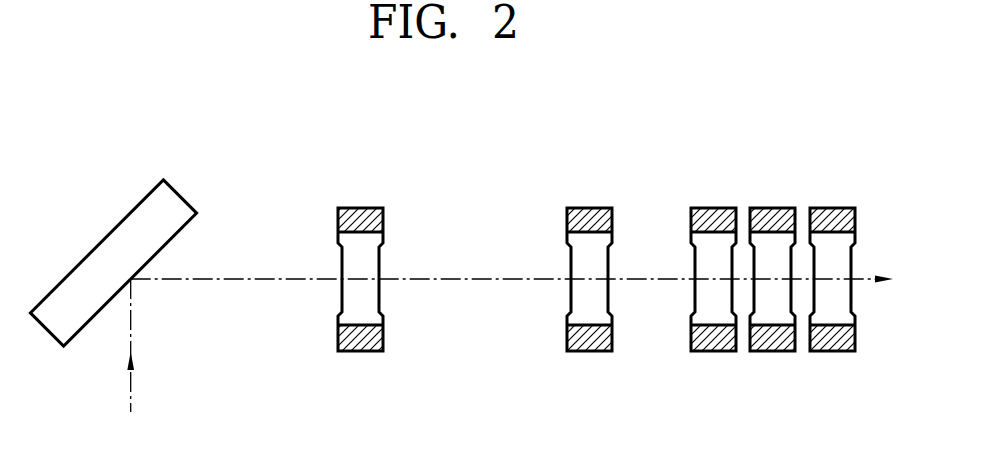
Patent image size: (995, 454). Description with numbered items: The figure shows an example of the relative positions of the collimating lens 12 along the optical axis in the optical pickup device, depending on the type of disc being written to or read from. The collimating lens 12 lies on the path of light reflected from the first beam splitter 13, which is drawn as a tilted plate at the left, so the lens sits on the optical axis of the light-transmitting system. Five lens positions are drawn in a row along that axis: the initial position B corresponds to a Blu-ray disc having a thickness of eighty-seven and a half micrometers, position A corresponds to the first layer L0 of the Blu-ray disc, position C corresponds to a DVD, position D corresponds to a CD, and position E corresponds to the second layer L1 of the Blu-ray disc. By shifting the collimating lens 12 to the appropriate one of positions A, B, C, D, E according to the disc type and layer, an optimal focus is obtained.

The collimating lens 12 is at (590, 264).
The first beam splitter 13 is at (102, 245).
The position corresponding to a first layer L0 of the BD A is at (361, 233).
The initial position corresponding to a BD B is at (590, 233).
The position corresponding to a DVD C is at (715, 233).
The position corresponding to a CD D is at (772, 233).
The position corresponding to a second layer L1 of the BD E is at (832, 233).